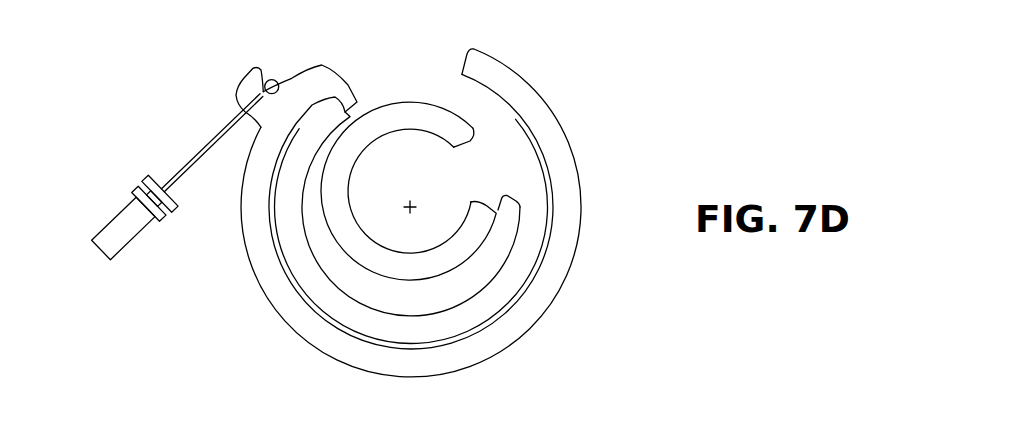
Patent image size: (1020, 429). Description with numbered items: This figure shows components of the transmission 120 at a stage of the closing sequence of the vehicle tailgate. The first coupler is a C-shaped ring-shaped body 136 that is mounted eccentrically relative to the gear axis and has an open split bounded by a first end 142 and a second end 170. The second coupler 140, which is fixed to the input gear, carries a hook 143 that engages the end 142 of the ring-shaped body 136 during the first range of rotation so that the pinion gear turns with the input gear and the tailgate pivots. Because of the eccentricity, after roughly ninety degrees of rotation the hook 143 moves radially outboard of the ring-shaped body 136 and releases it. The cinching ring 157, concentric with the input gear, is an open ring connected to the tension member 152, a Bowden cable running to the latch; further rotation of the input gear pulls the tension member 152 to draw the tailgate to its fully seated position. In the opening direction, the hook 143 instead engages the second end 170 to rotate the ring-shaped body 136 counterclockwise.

The transmission 120 is at (558, 64).
The ring-shaped body 136 is at (333, 215).
The second coupler 140 is at (523, 251).
The end 142 is at (482, 206).
The hook 143 is at (520, 207).
The tension member 152 is at (100, 230).
The cinching ring 157 is at (533, 305).
The second end 170 is at (472, 148).